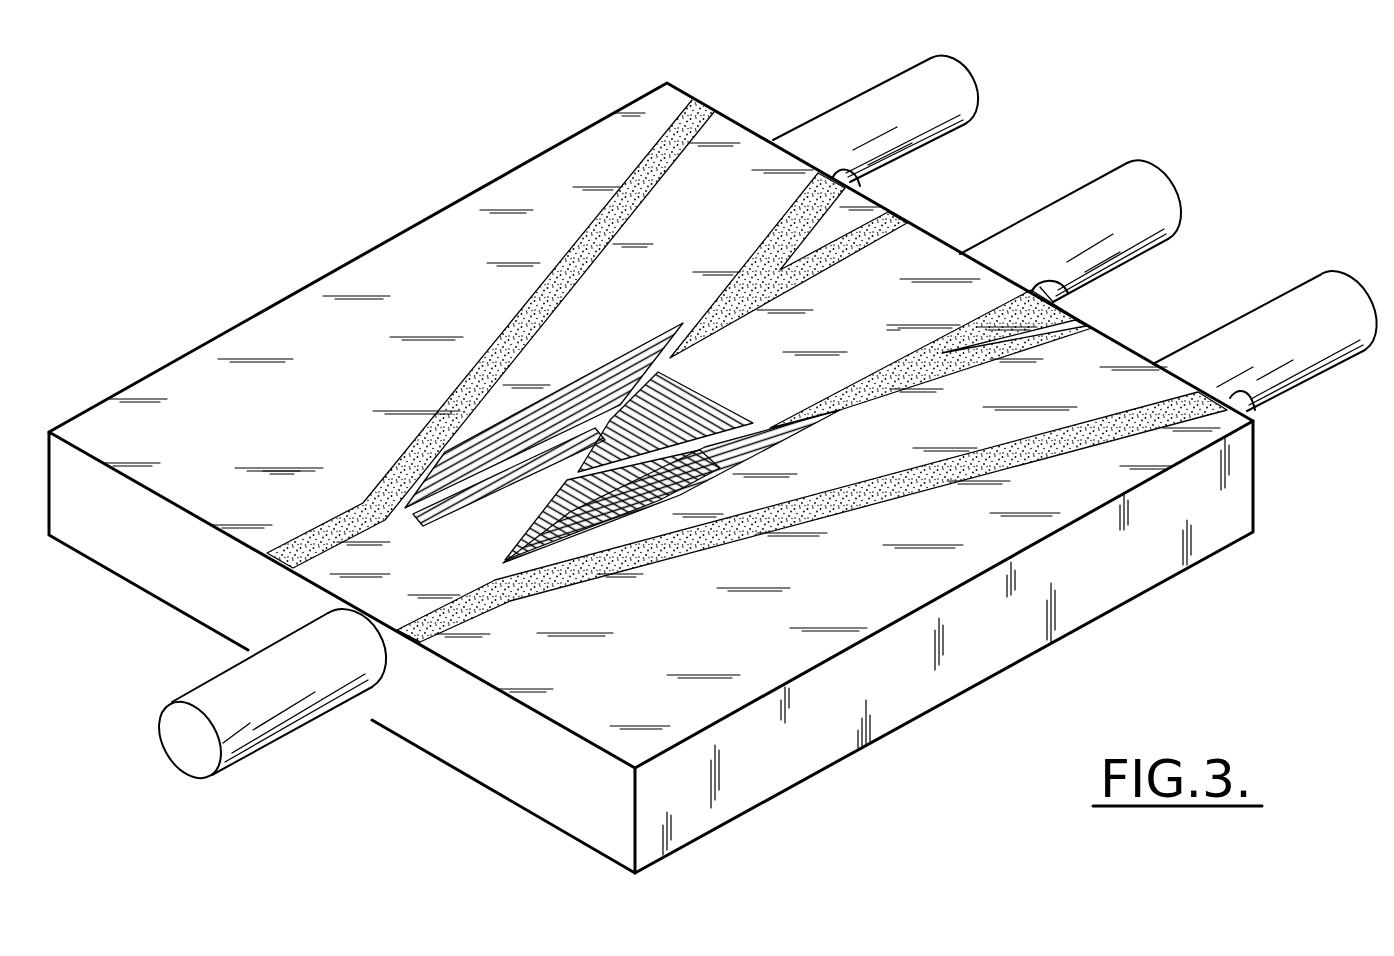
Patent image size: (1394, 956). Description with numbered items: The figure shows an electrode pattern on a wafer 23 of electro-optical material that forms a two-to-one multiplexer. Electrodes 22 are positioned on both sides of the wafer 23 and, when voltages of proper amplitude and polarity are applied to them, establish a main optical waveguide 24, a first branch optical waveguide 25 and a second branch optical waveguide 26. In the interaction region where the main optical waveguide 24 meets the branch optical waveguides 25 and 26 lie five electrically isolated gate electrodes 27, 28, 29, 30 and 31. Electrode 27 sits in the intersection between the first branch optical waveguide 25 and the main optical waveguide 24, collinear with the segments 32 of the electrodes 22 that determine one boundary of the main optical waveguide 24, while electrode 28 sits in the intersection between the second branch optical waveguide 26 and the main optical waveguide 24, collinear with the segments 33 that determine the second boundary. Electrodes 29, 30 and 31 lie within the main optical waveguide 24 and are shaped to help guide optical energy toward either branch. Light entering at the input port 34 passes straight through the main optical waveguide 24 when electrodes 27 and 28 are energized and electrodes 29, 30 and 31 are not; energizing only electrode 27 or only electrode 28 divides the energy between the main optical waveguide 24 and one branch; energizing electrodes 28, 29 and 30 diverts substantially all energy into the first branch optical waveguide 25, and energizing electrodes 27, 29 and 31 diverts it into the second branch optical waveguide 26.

The electrodes 22 is at (700, 100).
The wafer 23 is at (1230, 533).
The main optical waveguide 24 is at (942, 252).
The first branch optical waveguide 25 is at (1123, 358).
The second branch optical waveguide 26 is at (737, 133).
The gate electrode 27 is at (798, 435).
The gate electrode 28 is at (618, 368).
The gate electrode 29 is at (698, 398).
The gate electrode 30 is at (465, 498).
The gate electrode 31 is at (523, 528).
The segments 32 is at (1070, 293).
The segments 33 is at (267, 557).
The input port 34 is at (345, 652).